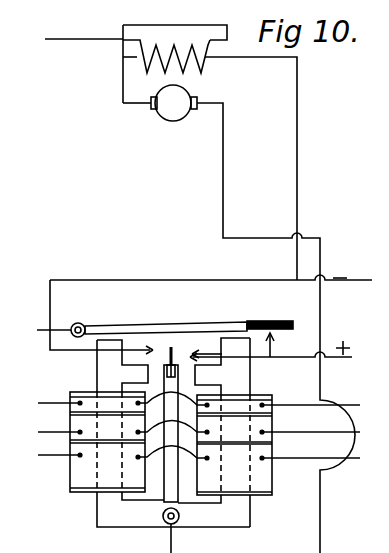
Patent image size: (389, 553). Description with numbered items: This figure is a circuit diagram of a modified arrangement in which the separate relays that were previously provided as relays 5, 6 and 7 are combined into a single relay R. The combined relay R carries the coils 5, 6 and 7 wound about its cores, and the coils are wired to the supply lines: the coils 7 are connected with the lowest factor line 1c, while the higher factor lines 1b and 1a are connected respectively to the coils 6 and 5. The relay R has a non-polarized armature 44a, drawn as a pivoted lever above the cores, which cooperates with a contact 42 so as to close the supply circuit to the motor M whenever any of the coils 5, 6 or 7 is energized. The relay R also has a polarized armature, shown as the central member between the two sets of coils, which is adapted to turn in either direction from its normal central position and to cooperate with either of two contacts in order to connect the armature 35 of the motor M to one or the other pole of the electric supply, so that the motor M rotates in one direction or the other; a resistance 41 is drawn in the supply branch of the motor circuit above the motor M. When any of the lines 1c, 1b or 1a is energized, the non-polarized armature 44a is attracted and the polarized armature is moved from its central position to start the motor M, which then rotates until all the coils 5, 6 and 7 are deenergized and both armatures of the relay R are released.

The rheostat resistance 41 is at (175, 49).
The armature 35 is at (173, 112).
The motor M is at (159, 163).
The non-polarized armature 44a is at (157, 327).
The contact 42 is at (275, 334).
The coil 7 is at (172, 402).
The coil 6 is at (169, 432).
The coil 5 is at (172, 461).
The lowest factor line 1c is at (196, 400).
The higher factor line 1b is at (199, 427).
The higher factor line 1a is at (199, 452).
The combined relay R is at (272, 527).